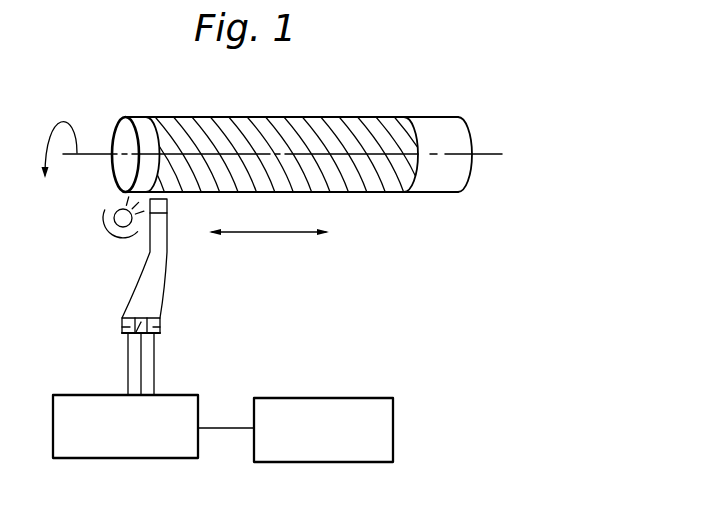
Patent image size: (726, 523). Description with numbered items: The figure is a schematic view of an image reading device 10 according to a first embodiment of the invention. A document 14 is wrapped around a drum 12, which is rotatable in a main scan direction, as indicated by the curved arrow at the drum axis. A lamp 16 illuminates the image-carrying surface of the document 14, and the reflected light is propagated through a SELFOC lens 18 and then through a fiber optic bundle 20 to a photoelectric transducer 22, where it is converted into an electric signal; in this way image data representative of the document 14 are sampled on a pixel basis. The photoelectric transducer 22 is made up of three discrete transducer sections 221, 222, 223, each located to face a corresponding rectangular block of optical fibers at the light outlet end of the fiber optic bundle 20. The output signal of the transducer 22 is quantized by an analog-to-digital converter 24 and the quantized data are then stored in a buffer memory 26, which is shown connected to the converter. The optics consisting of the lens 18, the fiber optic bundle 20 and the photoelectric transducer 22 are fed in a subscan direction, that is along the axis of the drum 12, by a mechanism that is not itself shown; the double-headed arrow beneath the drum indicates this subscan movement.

The image reading device 10 is at (333, 133).
The drum 12 is at (438, 118).
The document 14 is at (343, 132).
The lamp 16 is at (112, 235).
The SELFOC lens 18 is at (167, 205).
The fiber optic bundle 20 is at (150, 293).
The photoelectric transducer 22 is at (138, 334).
The transducer section 221 is at (122, 328).
The transducer section 222 is at (140, 326).
The transducer section 223 is at (160, 327).
The analog-to-digital converter 24 is at (128, 460).
The buffer memory 26 is at (332, 463).